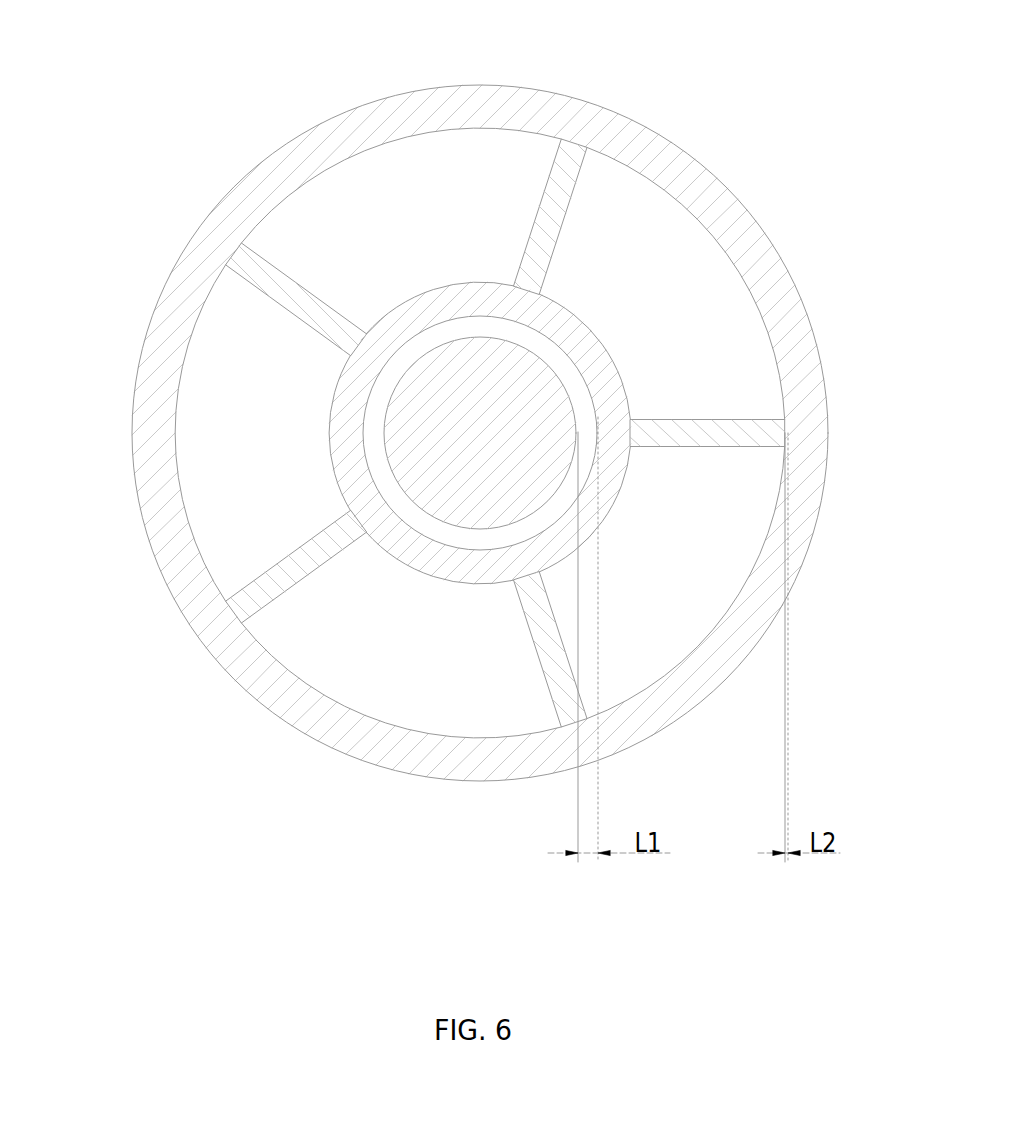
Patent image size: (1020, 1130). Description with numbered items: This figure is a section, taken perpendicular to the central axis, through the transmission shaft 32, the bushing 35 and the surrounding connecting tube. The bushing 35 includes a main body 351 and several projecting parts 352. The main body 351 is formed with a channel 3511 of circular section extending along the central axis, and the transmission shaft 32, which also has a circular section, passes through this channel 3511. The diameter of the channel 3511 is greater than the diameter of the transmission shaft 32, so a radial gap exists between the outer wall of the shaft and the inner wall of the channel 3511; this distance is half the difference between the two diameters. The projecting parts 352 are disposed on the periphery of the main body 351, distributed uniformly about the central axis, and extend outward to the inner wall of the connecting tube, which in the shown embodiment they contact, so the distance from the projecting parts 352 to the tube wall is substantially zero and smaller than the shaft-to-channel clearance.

The transmission shaft 32 is at (400, 450).
The bushing 35 is at (461, 398).
The main body 351 is at (573, 320).
The channel 3511 is at (433, 328).
The projecting parts 352 is at (278, 262).